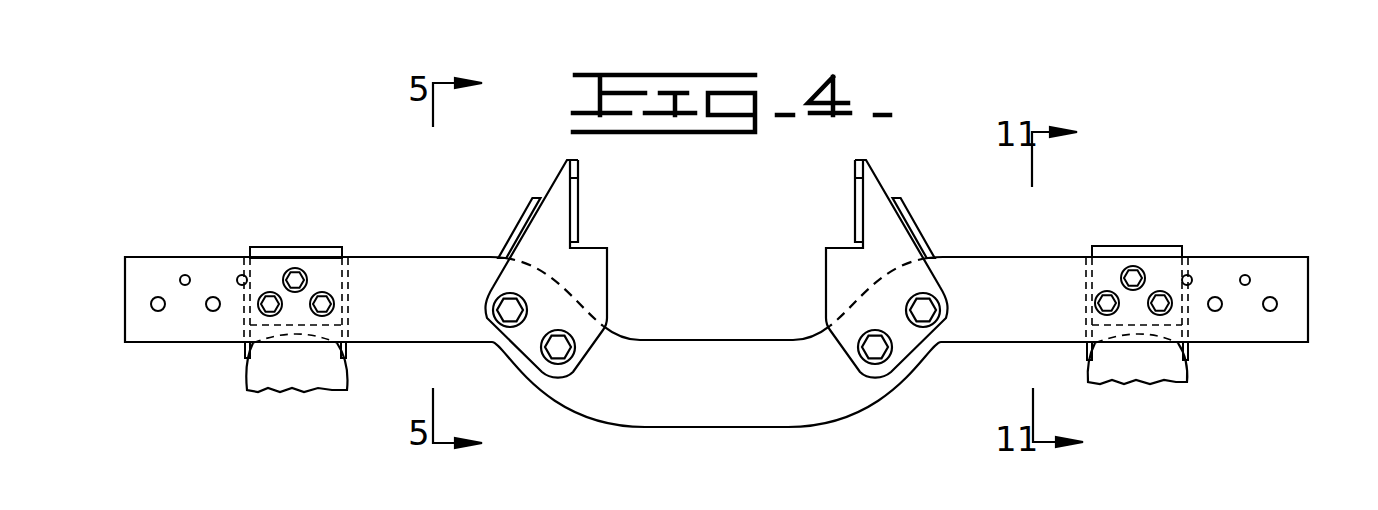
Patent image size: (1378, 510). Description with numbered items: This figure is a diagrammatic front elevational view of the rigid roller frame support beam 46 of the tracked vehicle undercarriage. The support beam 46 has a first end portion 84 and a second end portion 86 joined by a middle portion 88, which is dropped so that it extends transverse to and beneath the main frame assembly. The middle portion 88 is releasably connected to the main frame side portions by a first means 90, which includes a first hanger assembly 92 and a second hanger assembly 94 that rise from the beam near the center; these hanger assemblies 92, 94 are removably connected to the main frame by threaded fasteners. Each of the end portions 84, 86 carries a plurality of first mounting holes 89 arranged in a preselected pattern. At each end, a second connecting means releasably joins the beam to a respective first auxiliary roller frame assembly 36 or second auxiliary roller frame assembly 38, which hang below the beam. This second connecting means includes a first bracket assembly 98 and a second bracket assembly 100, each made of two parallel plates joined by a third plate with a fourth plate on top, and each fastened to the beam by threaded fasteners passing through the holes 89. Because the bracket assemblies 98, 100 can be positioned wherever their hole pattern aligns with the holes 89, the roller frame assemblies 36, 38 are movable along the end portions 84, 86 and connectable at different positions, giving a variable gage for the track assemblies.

The first auxiliary roller frame assembly 36 is at (338, 391).
The second auxiliary roller frame assembly 38 is at (1187, 383).
The rigid roller frame support beam 46 is at (724, 316).
The first end portion 84 is at (153, 338).
The second end portion 86 is at (1288, 267).
The middle portion 88 is at (680, 330).
The first mounting holes 89 is at (240, 277).
The first means 90 is at (533, 242).
The first hanger assembly 92 is at (549, 188).
The second hanger assembly 94 is at (882, 182).
The first bracket assembly 98 is at (245, 356).
The second bracket assembly 100 is at (1190, 349).